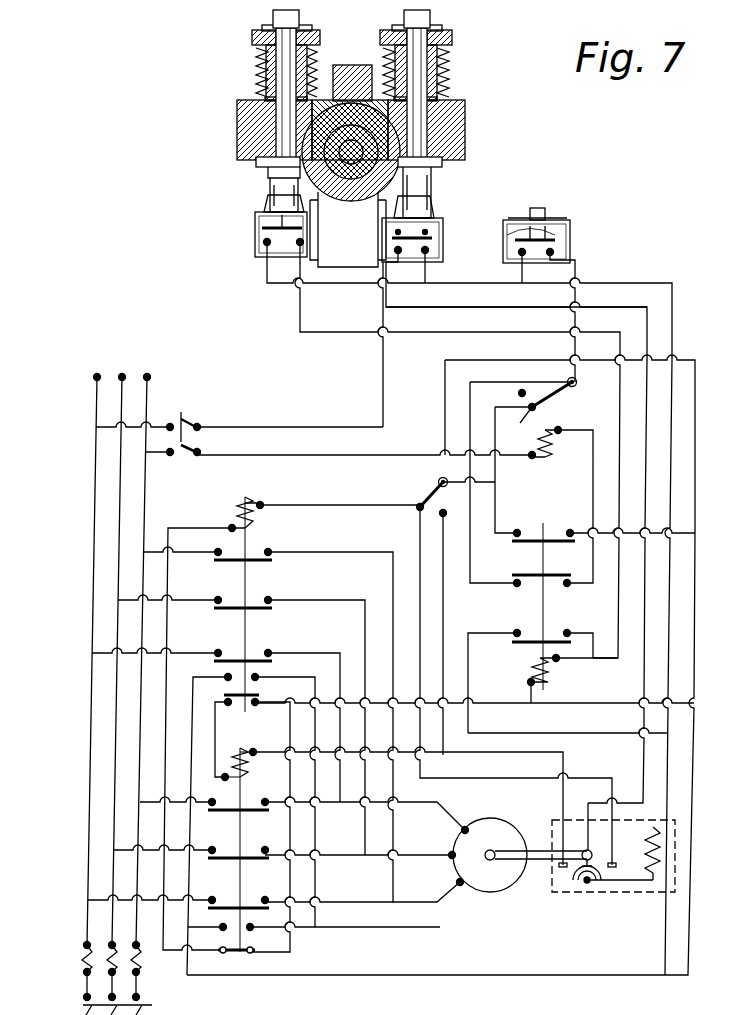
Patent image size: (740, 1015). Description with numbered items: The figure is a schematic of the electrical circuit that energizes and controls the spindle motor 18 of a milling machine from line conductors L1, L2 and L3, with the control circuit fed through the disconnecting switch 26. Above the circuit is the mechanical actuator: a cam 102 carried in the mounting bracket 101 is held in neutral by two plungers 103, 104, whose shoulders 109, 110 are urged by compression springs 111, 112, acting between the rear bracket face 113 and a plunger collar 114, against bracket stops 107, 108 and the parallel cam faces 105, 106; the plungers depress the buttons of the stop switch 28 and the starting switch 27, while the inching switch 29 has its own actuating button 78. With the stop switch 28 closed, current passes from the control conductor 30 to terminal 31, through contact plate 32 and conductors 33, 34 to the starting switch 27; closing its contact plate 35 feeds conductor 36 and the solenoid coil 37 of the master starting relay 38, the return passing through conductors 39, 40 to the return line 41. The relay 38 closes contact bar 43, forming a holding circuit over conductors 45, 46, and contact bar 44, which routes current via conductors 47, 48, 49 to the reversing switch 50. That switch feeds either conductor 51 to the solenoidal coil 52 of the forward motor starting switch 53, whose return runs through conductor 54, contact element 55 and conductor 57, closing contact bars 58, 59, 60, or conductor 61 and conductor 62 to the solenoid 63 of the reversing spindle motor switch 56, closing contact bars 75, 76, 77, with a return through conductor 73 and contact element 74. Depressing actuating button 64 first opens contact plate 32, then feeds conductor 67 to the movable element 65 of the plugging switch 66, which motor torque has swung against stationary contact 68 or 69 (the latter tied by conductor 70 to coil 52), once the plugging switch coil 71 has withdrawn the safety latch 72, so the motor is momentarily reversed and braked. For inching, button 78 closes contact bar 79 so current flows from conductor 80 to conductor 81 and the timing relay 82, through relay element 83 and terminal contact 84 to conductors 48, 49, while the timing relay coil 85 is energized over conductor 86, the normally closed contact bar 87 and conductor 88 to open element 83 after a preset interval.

The spindle motor 18 is at (500, 820).
The disconnecting switch 26 is at (188, 412).
The starting switch 27 is at (255, 240).
The stop switch 28 is at (382, 243).
The inching switch 29 is at (572, 247).
The control conductor 30 is at (382, 409).
The terminal 31 is at (388, 212).
The contact plate 32 is at (443, 245).
The conductor 33 is at (443, 262).
The conductor 34 is at (270, 281).
The contact plate 35 is at (262, 227).
The conductor 36 is at (424, 338).
The solenoid coil 37 is at (548, 680).
The master starting relay 38 is at (550, 513).
The conductor 39 is at (528, 691).
The conductor 40 is at (578, 704).
The return line 41 is at (380, 455).
The contact bar 43 is at (532, 630).
The contact bar 44 is at (556, 533).
The conductor 45 is at (604, 734).
The conductor 46 is at (575, 626).
The conductor 47 is at (666, 534).
The conductor 48 is at (495, 490).
The conductor 49 is at (442, 477).
The reversing switch 50 is at (412, 495).
The conductor 51 is at (340, 500).
The solenoidal coil 52 is at (240, 503).
The forward motor starting switch 53 is at (265, 491).
The conductor 54 is at (170, 528).
The contact element 55 is at (232, 945).
The reversing spindle motor switch 56 is at (215, 987).
The conductor 57 is at (289, 722).
The contact bar 58 is at (216, 659).
The contact bar 59 is at (226, 614).
The contact bar 60 is at (226, 565).
The conductor 61 is at (445, 614).
The conductor 62 is at (505, 756).
The solenoid 63 is at (249, 770).
The actuating button 64 is at (428, 180).
The movable element 65 is at (583, 887).
The plugging switch 66 is at (678, 881).
The conductor 67 is at (425, 296).
The stationary contact element 68 is at (561, 870).
The stationary contact element 69 is at (611, 870).
The conductor 70 is at (394, 548).
The plugging switch coil 71 is at (663, 855).
The safety latch 72 is at (640, 884).
The conductor 73 is at (215, 720).
The contact element 74 is at (258, 695).
The contact bar 75 is at (222, 814).
The contact bar 76 is at (230, 862).
The contact bar 77 is at (226, 912).
The actuating button 78 is at (537, 207).
The contact bar 79 is at (557, 237).
The conductor 80 is at (524, 276).
The conductor 81 is at (578, 276).
The timing relay 82 is at (583, 394).
The relay element 83 is at (548, 398).
The terminal contact 84 is at (515, 469).
The timing relay coil 85 is at (565, 432).
The conductor 86 is at (472, 398).
The contact bar 87 is at (550, 574).
The conductor 88 is at (594, 520).
The mounting bracket 101 is at (352, 64).
The cam 102 is at (348, 203).
The plunger 103 is at (462, 112).
The plunger 104 is at (240, 111).
The cam face 105 is at (410, 142).
The cam face 106 is at (294, 191).
The bracket stop 107 is at (440, 152).
The bracket stop 108 is at (270, 170).
The plunger shoulder 109 is at (432, 165).
The plunger shoulder 110 is at (262, 163).
The compression spring 111 is at (445, 66).
The compression spring 112 is at (258, 60).
The rear bracket face 113 is at (245, 95).
The plunger collar 114 is at (251, 34).
The line conductor L1 is at (92, 716).
The line conductor L2 is at (116, 740).
The line conductor L3 is at (139, 762).